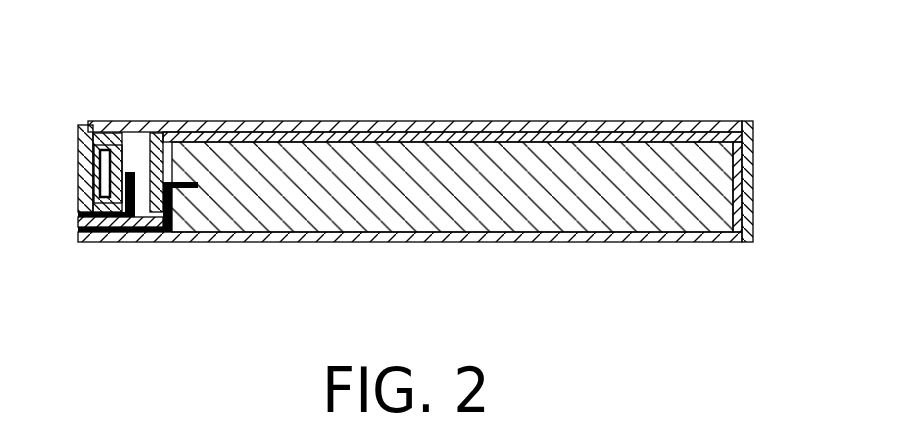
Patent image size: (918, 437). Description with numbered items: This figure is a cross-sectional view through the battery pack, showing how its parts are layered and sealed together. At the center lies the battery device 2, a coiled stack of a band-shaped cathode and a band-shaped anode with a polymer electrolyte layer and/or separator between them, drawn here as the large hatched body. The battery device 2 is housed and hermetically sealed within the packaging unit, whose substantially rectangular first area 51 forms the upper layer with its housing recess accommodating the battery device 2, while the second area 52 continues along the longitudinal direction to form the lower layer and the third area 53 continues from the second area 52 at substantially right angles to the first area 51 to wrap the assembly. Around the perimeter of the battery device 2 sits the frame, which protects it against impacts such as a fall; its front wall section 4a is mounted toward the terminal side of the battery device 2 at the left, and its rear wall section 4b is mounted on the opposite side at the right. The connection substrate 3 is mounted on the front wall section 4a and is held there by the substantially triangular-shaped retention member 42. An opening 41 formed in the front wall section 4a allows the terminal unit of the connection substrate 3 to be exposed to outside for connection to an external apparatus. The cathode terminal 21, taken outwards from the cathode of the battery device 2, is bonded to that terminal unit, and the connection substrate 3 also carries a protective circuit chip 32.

The battery device 2 is at (473, 177).
The connection substrate 3 is at (118, 165).
The front wall section 4a is at (102, 140).
The rear wall section 4b is at (755, 140).
The cathode terminal 21 is at (102, 232).
The protective circuit chip 32 is at (123, 232).
The opening 41 is at (88, 167).
The retention member 42 is at (145, 150).
The first area 51 is at (270, 140).
The second area 52 is at (383, 235).
The third area 53 is at (370, 128).